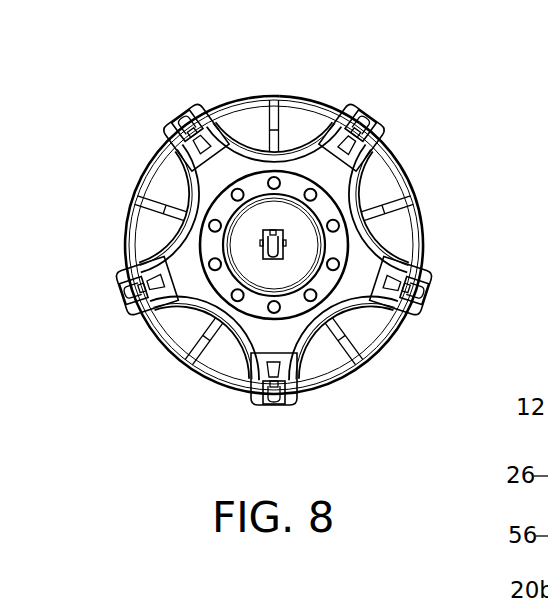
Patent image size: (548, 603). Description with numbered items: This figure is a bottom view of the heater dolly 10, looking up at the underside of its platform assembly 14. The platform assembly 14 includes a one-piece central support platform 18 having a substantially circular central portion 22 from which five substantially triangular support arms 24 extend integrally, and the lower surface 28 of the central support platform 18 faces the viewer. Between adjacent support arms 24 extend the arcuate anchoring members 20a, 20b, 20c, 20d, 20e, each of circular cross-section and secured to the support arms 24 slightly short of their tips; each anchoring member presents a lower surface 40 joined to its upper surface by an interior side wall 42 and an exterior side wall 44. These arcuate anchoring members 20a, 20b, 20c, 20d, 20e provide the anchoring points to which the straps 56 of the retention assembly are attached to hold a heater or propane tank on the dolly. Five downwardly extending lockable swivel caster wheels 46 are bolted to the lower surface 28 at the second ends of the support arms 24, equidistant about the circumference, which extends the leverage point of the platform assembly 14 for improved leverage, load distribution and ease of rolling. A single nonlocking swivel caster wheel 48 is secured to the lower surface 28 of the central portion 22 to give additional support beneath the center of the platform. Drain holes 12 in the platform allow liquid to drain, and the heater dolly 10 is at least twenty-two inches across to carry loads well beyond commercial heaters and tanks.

The heater dolly 10 is at (445, 133).
The drain holes 12 is at (165, 122).
The platform assembly 14 is at (145, 220).
The central support platform 18 is at (188, 290).
The arcuate anchoring member 20a is at (150, 165).
The arcuate anchoring member 20b is at (208, 380).
The arcuate anchoring member 20c is at (387, 340).
The arcuate anchoring member 20d is at (420, 243).
The arcuate anchoring member 20e is at (285, 100).
The central portion 22 is at (240, 250).
The support arms 24 is at (385, 137).
The lower surface 28 is at (293, 325).
The lower surface 40 is at (320, 105).
The interior side wall 42 is at (217, 108).
The exterior side wall 44 is at (248, 98).
The lockable swivel caster wheels 46 is at (113, 297).
The nonlocking swivel caster wheel 48 is at (277, 228).
The straps 56 is at (347, 347).